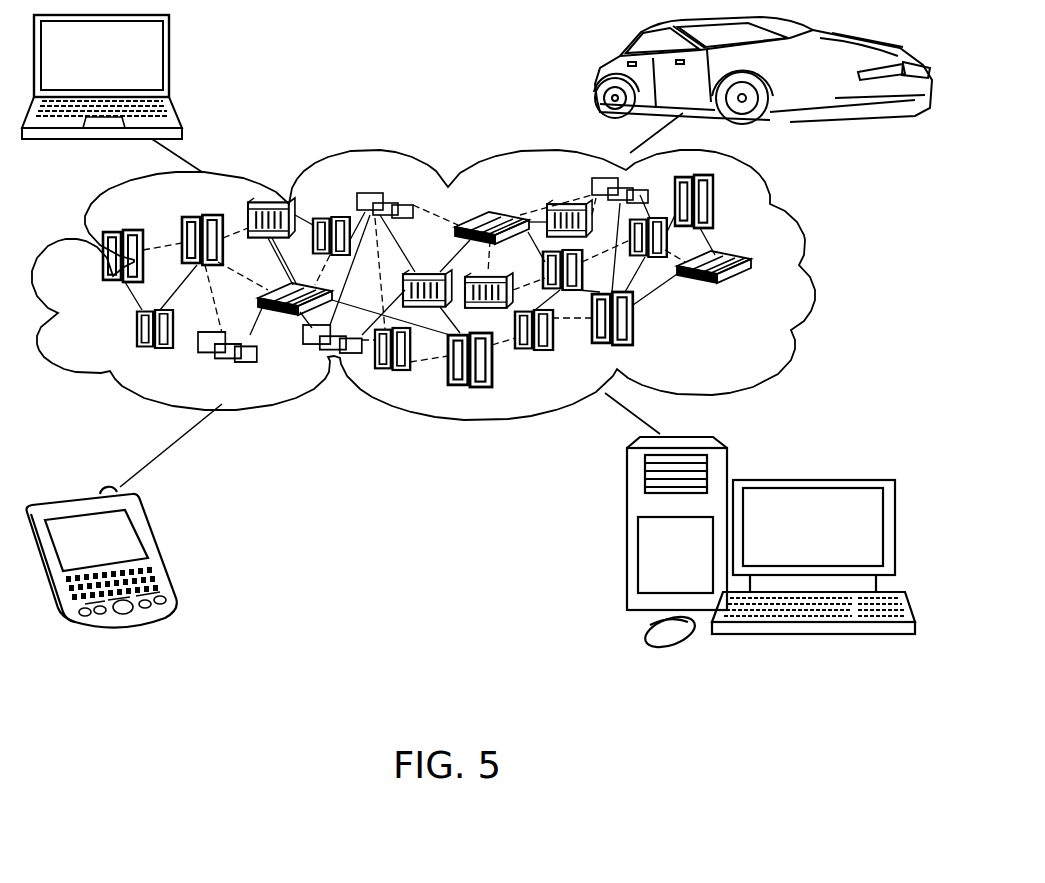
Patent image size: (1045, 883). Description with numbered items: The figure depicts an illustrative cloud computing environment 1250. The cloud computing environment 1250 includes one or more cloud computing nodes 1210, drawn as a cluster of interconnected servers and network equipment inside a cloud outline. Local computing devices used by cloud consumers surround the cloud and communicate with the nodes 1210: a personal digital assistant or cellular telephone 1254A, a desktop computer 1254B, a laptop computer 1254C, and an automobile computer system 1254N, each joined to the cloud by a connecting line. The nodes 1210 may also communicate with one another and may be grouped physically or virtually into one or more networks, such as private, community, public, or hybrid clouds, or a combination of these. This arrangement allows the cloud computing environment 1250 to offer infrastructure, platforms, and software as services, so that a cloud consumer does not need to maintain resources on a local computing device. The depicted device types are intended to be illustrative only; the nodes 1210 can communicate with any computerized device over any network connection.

The cloud computing environment 1250 is at (813, 262).
The cloud computing nodes 1210 is at (758, 290).
The personal digital assistant or cellular telephone 1254A is at (160, 552).
The desktop computer 1254B is at (821, 461).
The laptop computer 1254C is at (170, 62).
The automobile computer system 1254N is at (597, 72).